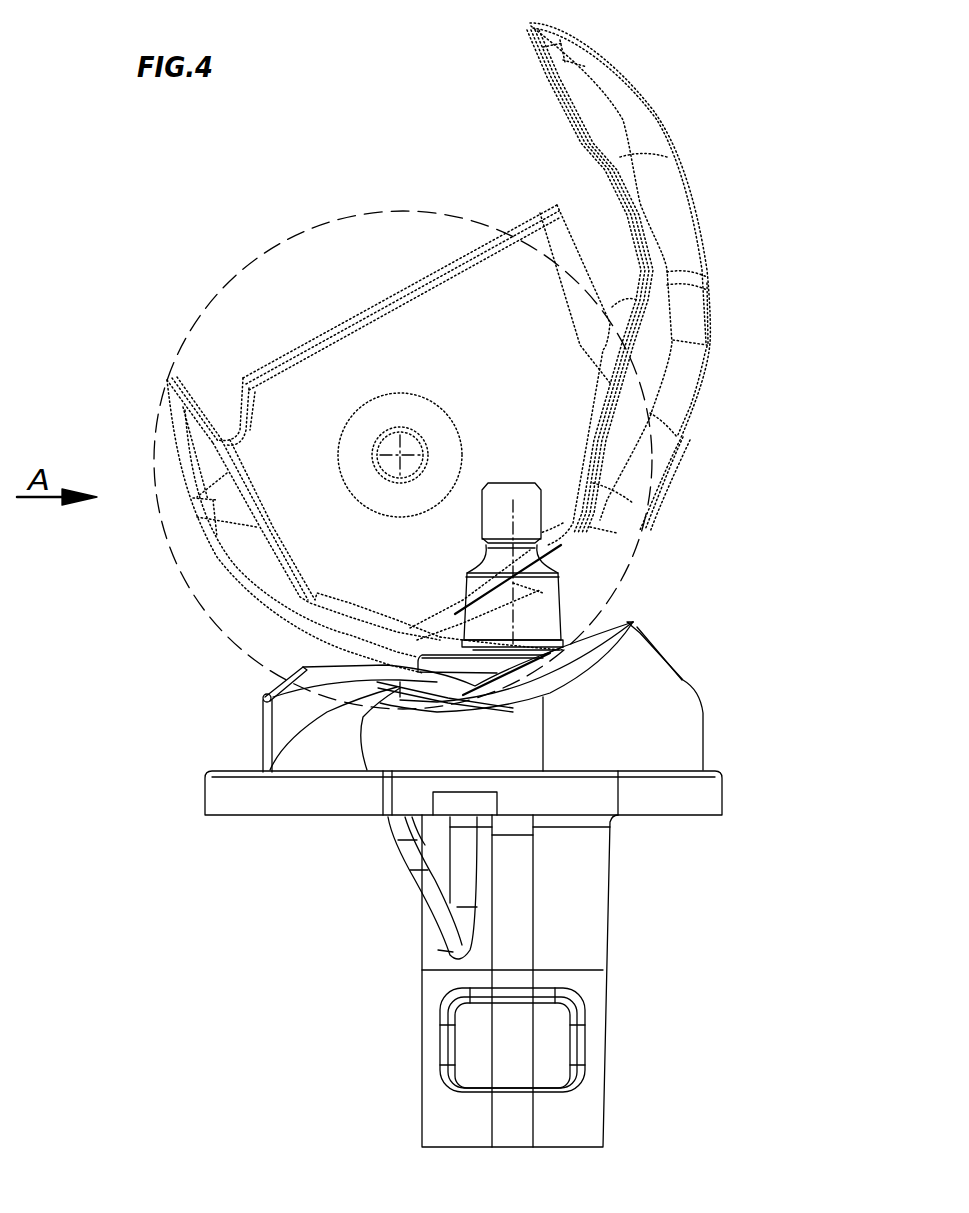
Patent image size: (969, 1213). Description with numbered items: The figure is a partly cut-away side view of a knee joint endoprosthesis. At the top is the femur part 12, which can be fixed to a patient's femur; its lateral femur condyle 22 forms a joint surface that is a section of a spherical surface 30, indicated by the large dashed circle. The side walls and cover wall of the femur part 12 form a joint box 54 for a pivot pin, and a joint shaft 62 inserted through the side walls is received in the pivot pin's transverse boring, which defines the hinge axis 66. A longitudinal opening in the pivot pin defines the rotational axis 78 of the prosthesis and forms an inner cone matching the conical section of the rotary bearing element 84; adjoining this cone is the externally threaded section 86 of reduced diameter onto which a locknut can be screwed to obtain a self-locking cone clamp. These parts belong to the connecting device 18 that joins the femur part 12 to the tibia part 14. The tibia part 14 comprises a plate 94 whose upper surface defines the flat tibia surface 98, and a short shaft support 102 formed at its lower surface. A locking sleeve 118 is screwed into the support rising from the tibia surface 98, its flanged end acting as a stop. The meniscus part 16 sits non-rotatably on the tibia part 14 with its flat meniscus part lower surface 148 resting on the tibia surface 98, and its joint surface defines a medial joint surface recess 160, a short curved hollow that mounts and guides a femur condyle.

The femur part 12 is at (717, 170).
The tibia part 14 is at (640, 900).
The meniscus part 16 is at (703, 668).
The connecting device 18 is at (580, 605).
The lateral femur condyle 22 is at (213, 593).
The spherical surface 30 is at (215, 286).
The joint box 54 is at (403, 300).
The joint shaft 62 is at (440, 410).
The hinge axis 66 is at (385, 445).
The rotational axis 78 is at (500, 508).
The rotary bearing element 84 is at (560, 592).
The externally threaded section 86 is at (515, 498).
The plate 94 is at (708, 795).
The tibia surface 98 is at (237, 770).
The shaft support 102 is at (595, 1027).
The locking sleeve 118 is at (445, 652).
The meniscus part lower surface 148 is at (298, 772).
The medial joint surface recess 160 is at (548, 678).